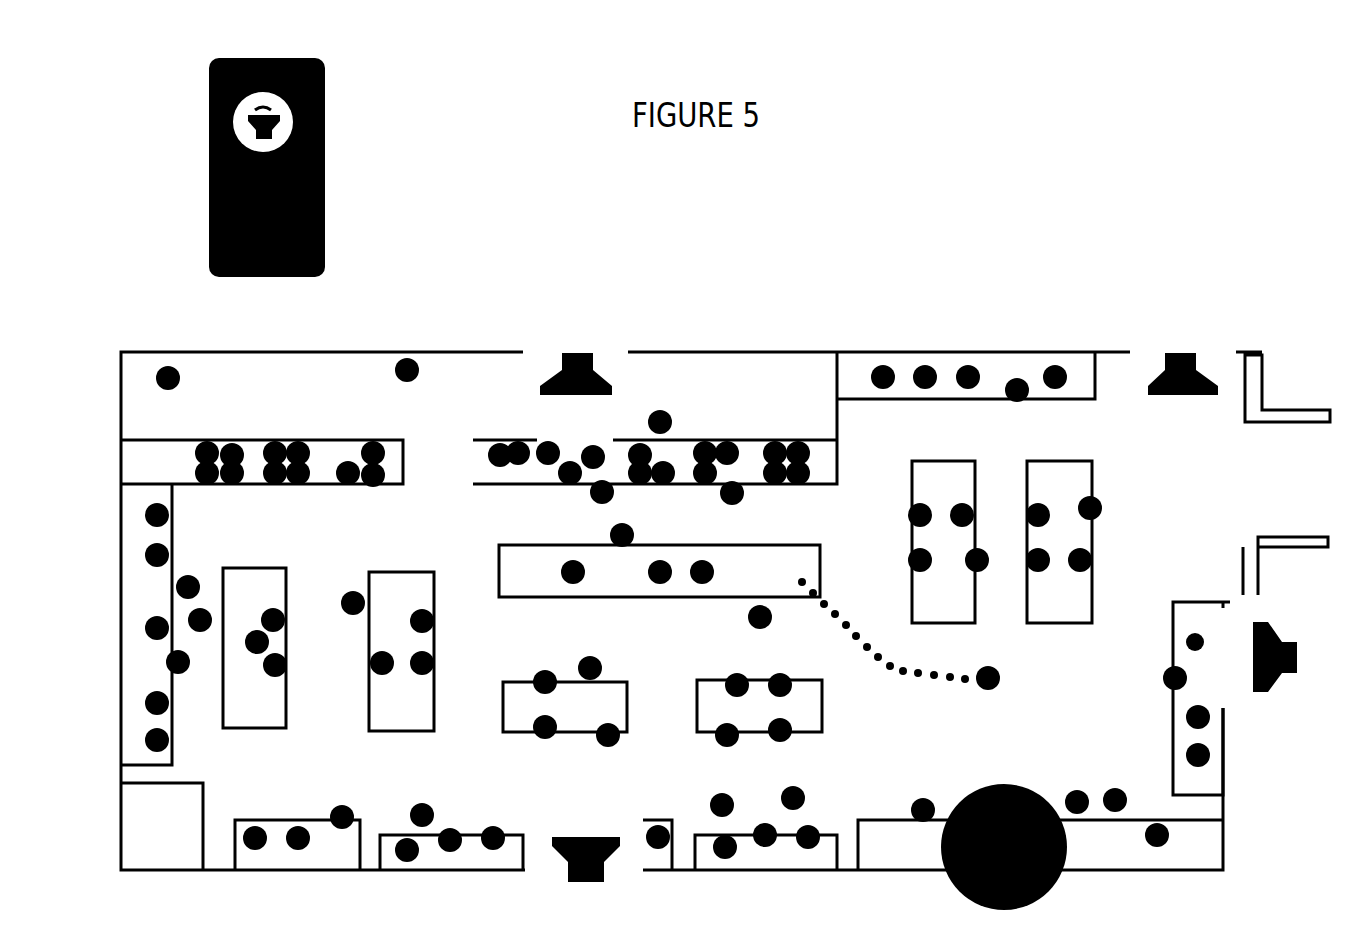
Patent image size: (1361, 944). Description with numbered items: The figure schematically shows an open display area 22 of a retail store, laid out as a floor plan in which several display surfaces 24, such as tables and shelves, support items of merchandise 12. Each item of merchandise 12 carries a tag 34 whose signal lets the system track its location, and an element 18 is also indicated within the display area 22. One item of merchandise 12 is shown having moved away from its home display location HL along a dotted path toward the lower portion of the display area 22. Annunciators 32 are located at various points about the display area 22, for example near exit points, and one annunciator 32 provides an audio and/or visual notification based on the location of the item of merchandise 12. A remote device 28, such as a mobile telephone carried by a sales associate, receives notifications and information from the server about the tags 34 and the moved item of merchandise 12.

The remote device 28 is at (323, 145).
The tag 34 is at (890, 367).
The display surface 24 is at (503, 542).
The home display location HL is at (805, 578).
The item of merchandise 12 is at (1003, 678).
The display area 22 is at (1112, 752).
The annunciator 32 is at (1050, 890).
The item 18 is at (1170, 838).